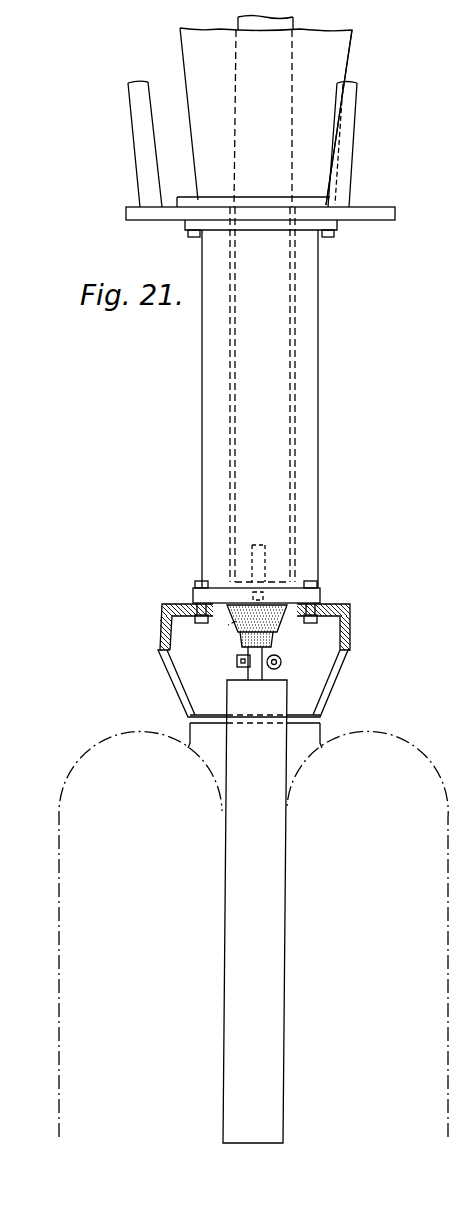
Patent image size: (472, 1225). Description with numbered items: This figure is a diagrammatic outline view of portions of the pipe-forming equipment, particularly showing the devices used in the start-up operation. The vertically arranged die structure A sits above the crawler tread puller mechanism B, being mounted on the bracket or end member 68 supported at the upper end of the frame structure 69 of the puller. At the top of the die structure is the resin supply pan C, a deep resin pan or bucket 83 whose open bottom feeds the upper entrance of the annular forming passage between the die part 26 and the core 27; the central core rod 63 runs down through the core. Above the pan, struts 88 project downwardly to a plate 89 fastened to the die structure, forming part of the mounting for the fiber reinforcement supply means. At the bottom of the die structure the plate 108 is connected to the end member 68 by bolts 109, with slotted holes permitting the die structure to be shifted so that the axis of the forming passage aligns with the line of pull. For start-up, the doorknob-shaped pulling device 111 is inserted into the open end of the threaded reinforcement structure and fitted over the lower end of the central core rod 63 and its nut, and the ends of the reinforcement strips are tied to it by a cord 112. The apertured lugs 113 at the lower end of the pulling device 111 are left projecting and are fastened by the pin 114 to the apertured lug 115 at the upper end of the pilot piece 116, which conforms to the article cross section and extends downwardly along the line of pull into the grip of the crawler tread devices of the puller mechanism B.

The die structure A is at (198, 390).
The puller mechanism B is at (55, 872).
The resin supply pan C is at (353, 48).
The die part 26 is at (288, 458).
The core 27 is at (290, 350).
The central core rod 63 is at (265, 553).
The bracket 68 is at (162, 620).
The frame structure 69 is at (322, 732).
The resin pan 83 is at (352, 68).
The struts 88 is at (137, 122).
The plate 89 is at (126, 213).
The plate 108 is at (193, 592).
The bolts 109 is at (198, 582).
The pulling device 111 is at (236, 621).
The cord 112 is at (277, 635).
The apertured lugs 113 is at (243, 670).
The pin 114 is at (237, 660).
The apertured lug 115 is at (268, 677).
The pilot piece 116 is at (277, 697).